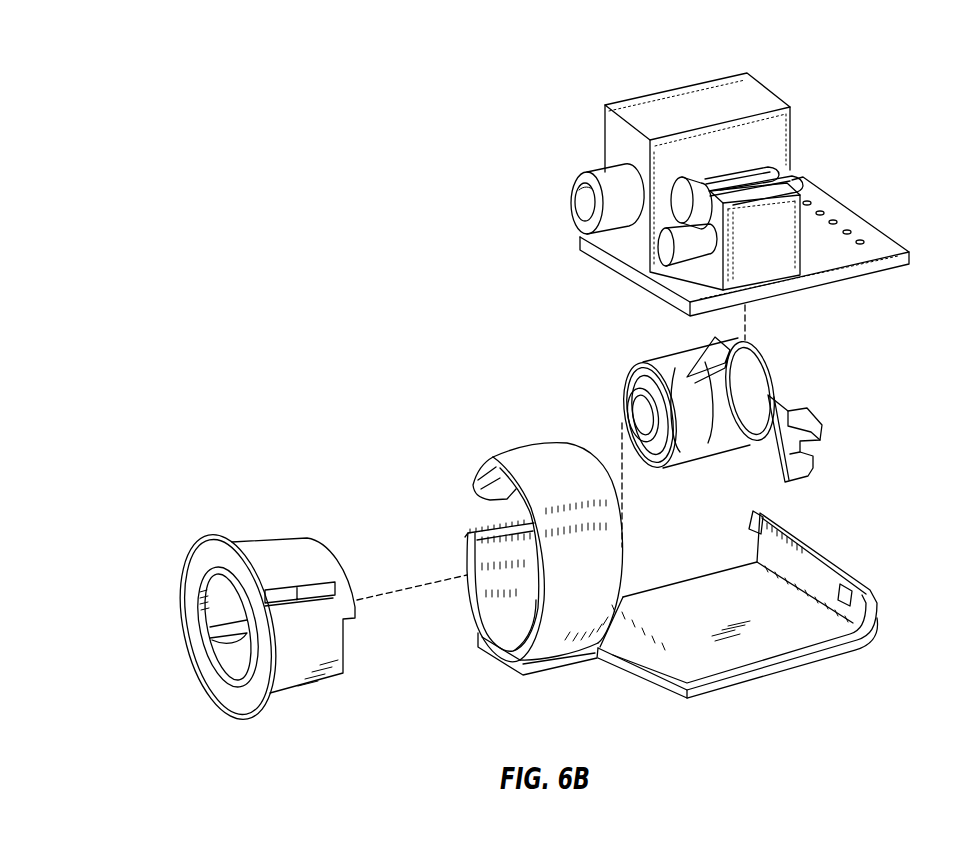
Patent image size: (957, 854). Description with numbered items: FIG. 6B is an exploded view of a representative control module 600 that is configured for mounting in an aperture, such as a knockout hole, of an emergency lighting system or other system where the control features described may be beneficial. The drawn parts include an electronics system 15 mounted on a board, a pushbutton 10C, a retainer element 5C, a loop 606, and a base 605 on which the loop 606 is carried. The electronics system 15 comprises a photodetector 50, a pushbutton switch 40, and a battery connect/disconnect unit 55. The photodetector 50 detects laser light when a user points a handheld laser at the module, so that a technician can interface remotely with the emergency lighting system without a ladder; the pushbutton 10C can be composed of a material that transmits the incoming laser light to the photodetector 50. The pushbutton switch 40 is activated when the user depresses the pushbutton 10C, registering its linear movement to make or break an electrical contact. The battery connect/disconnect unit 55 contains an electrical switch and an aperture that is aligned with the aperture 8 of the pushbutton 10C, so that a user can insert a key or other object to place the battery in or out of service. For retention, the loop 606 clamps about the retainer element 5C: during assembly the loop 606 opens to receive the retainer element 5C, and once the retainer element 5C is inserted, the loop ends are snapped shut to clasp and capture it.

The control module 600 is at (266, 150).
The electronics system 15 is at (838, 148).
The battery connect/disconnect unit 55 is at (730, 87).
The photodetector 50 is at (693, 180).
The pushbutton switch 40 is at (668, 248).
The pushbutton 10C is at (640, 347).
The aperture 8 is at (647, 412).
The loop 606 is at (546, 452).
The base tray 605 is at (839, 545).
The retainer element 5C is at (249, 512).